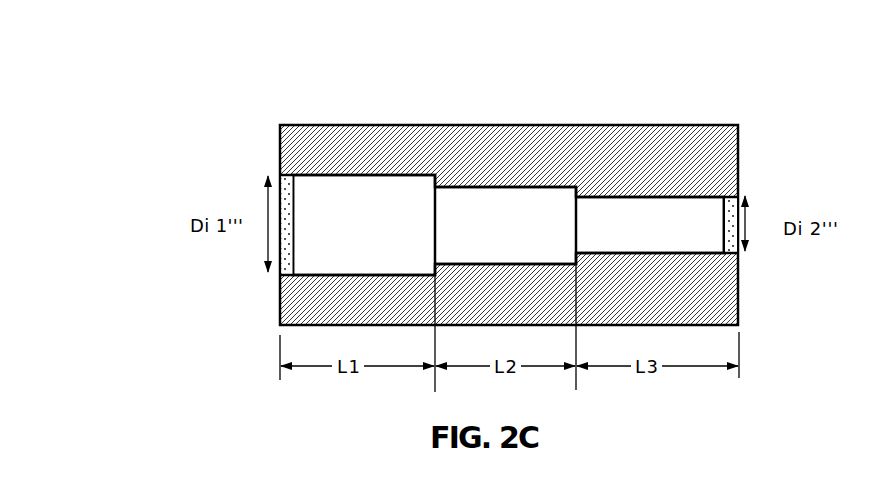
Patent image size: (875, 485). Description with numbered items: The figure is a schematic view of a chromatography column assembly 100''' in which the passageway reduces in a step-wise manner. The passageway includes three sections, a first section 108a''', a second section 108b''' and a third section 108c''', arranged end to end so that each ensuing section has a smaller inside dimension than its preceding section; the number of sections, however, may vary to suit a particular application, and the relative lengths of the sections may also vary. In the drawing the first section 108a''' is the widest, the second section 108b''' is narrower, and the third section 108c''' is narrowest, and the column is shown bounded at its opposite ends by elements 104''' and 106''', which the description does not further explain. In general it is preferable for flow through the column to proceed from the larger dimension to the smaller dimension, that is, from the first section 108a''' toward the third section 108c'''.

The chromatography column assembly 100''' is at (436, 170).
The first porous membrane / inlet 104''' is at (241, 160).
The second porous membrane / outlet 106''' is at (777, 149).
The first section 108a''' is at (364, 160).
The second section 108b''' is at (505, 154).
The third section 108c''' is at (650, 149).